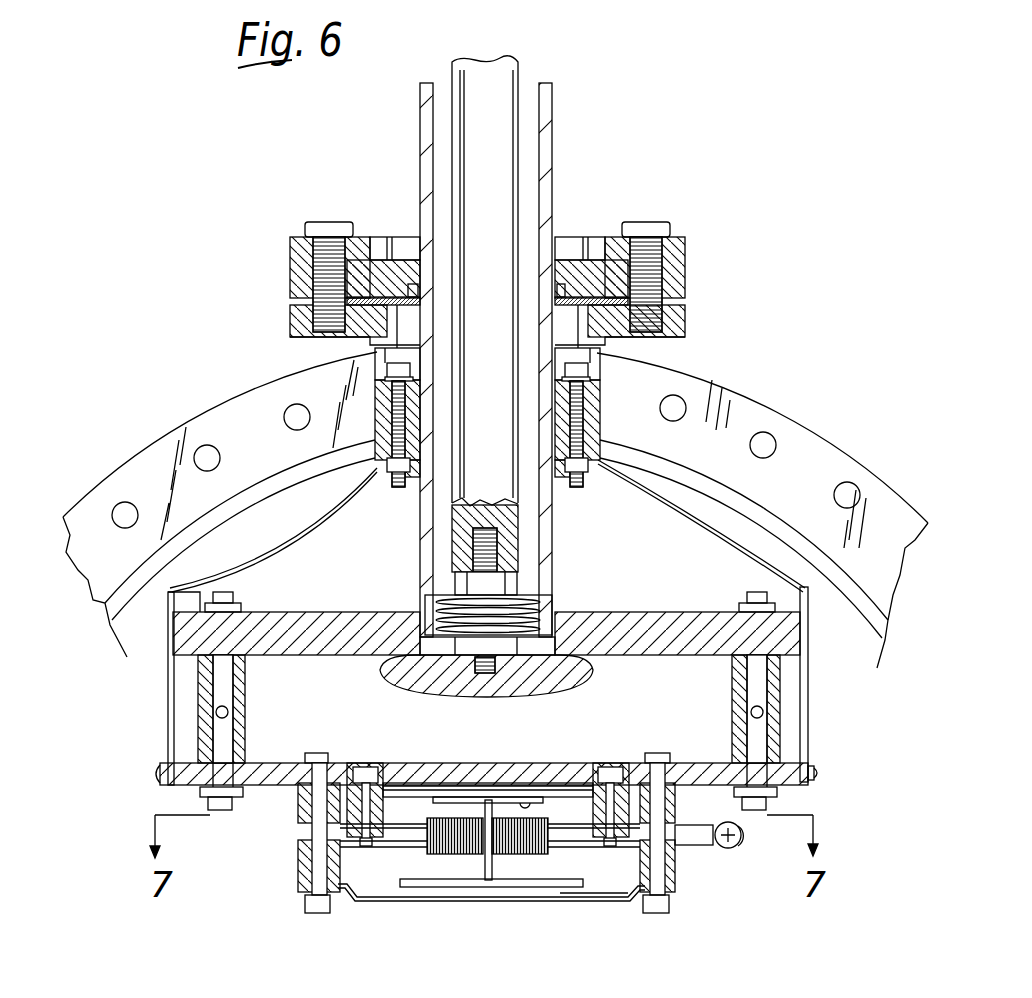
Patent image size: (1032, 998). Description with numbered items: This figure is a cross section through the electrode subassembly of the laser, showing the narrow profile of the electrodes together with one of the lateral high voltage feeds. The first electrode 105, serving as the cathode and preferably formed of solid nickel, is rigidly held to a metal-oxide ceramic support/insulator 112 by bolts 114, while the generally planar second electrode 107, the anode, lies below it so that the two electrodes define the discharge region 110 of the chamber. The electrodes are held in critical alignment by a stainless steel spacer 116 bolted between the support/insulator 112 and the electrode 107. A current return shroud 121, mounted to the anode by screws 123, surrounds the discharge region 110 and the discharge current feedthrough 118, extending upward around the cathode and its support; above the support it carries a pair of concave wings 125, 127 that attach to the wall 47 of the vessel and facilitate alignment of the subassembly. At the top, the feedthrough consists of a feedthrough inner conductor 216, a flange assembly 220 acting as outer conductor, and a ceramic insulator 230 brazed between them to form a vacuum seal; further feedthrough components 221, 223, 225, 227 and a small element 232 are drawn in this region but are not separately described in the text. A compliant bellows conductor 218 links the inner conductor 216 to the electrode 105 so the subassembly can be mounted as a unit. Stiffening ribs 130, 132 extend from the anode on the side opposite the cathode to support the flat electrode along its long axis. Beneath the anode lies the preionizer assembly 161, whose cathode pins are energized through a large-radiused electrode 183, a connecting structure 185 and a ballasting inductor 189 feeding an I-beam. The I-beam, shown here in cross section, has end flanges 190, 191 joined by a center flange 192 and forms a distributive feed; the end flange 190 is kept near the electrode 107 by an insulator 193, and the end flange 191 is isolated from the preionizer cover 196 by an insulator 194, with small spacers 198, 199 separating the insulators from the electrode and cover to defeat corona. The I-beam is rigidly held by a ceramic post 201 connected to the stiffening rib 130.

The wall 47 is at (255, 498).
The first electrode 105 is at (590, 676).
The second electrode 107 is at (572, 765).
The discharge region 110 is at (385, 719).
The support/insulator 112 is at (652, 623).
The bolts 114 is at (493, 673).
The spacer 116 is at (205, 700).
The discharge current feedthrough 118 is at (772, 697).
The current return shroud 121 is at (810, 737).
The screws 123 is at (815, 770).
The concave wing 125 is at (307, 540).
The concave wing 127 is at (700, 547).
The stiffening rib 130 is at (307, 848).
The stiffening rib 132 is at (677, 878).
The preionizer assembly 161 is at (338, 917).
The electrode 183 is at (743, 847).
The connecting structure 185 is at (692, 814).
The ballasting inductor 189 is at (513, 860).
The end flange 190 is at (525, 790).
The end flange 191 is at (552, 878).
The center flange 192 is at (478, 862).
The insulator 193 is at (423, 790).
The insulator 194 is at (358, 868).
The preionizer cover 196 is at (613, 898).
The spacer 198 is at (465, 785).
The spacer 199 is at (585, 897).
The ceramic post 201 is at (340, 845).
The feedthrough inner conductor 216 is at (498, 150).
The bellows conductor 218 is at (527, 590).
The flange assembly 220 is at (290, 214).
The lower clamp block 221 is at (673, 317).
The inner block 223 is at (580, 283).
The upper clamp block 225 is at (677, 270).
The shim plate 227 is at (652, 343).
The ceramic insulator 230 is at (547, 208).
The set screw 232 is at (420, 293).